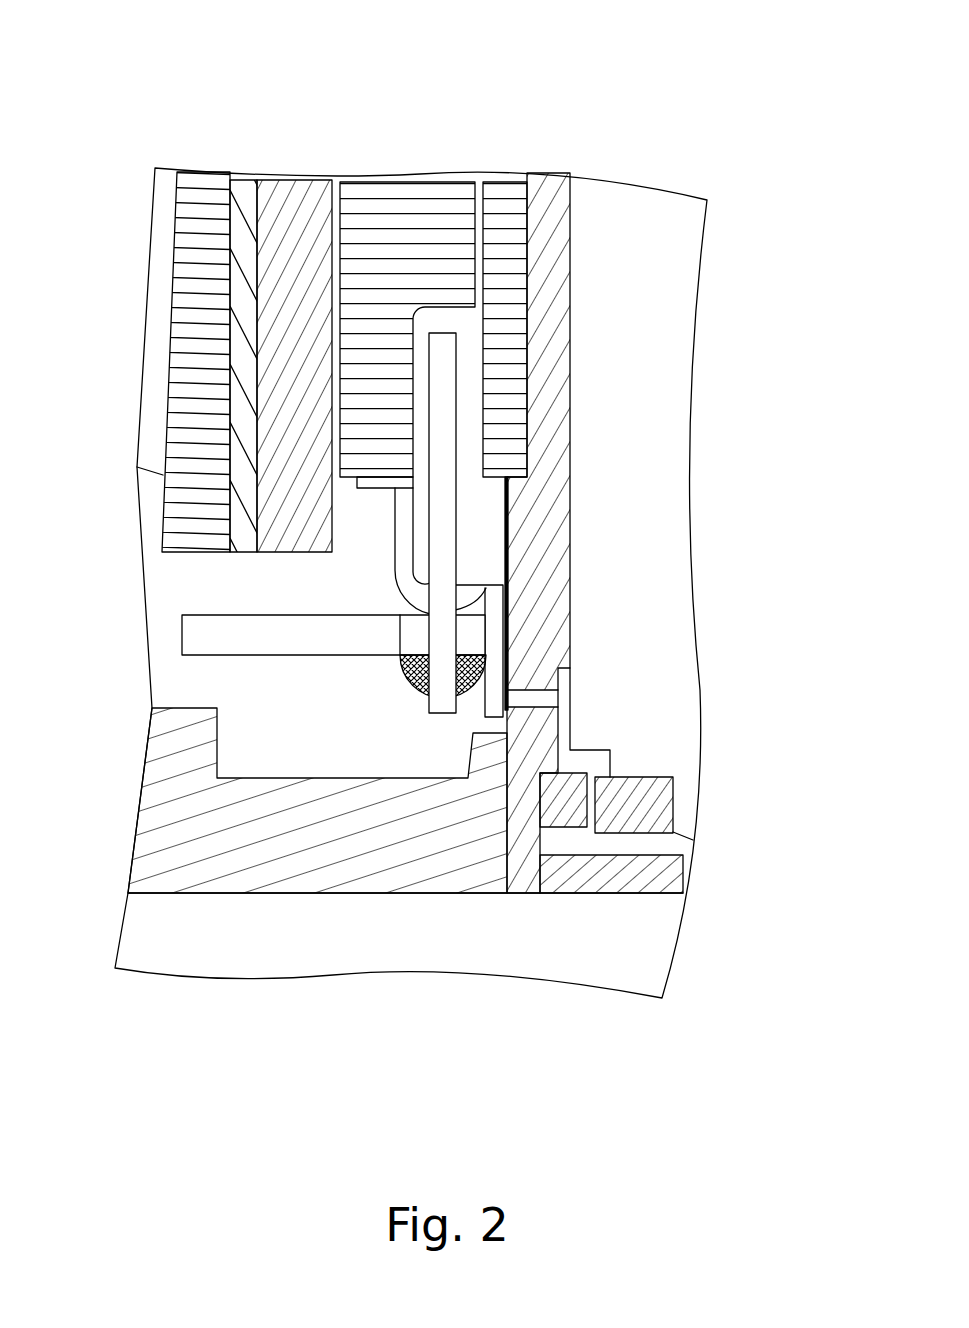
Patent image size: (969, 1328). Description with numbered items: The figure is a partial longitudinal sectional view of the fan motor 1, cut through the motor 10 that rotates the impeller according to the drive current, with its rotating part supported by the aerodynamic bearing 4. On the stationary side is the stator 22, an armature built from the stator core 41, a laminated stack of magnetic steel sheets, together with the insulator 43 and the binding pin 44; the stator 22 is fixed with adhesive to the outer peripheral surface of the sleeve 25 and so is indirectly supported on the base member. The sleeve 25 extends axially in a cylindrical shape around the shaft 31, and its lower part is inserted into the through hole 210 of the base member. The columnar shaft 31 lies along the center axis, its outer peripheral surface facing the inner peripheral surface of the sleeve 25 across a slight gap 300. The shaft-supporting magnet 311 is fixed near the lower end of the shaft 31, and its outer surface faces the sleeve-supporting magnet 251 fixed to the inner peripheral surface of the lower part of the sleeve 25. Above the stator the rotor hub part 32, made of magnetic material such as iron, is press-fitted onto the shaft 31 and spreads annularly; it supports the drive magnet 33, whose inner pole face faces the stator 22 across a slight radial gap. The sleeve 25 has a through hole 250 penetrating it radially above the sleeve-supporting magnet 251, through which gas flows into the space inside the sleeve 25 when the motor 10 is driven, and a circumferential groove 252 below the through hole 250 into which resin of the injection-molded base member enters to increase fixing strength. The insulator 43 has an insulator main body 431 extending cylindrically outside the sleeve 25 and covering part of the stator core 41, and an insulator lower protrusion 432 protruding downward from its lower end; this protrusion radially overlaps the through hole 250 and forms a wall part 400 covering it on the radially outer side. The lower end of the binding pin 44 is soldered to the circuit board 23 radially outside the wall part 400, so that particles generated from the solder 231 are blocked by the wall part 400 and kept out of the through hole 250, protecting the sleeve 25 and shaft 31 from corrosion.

The fan motor 1 is at (160, 97).
The motor 10 is at (663, 185).
The stator 22 is at (355, 557).
The circuit board 23 is at (236, 632).
The solder 231 is at (407, 670).
The sleeve 25 is at (545, 200).
The through hole 250 is at (497, 690).
The sleeve-supporting magnet 251 is at (563, 793).
The circumferential groove 252 is at (520, 707).
The through hole 210 is at (687, 845).
The gap 300 is at (570, 640).
The shaft 31 is at (600, 205).
The shaft-supporting magnet 311 is at (632, 803).
The rotor hub part 32 is at (245, 203).
The drive magnet 33 is at (292, 200).
The aerodynamic bearing 4 is at (526, 383).
The stator core 41 is at (447, 205).
The insulator 43 is at (412, 383).
The insulator main body 431 is at (473, 548).
The insulator lower protrusion 432 is at (493, 647).
The binding pin 44 is at (443, 687).
The wall part 400 is at (456, 700).